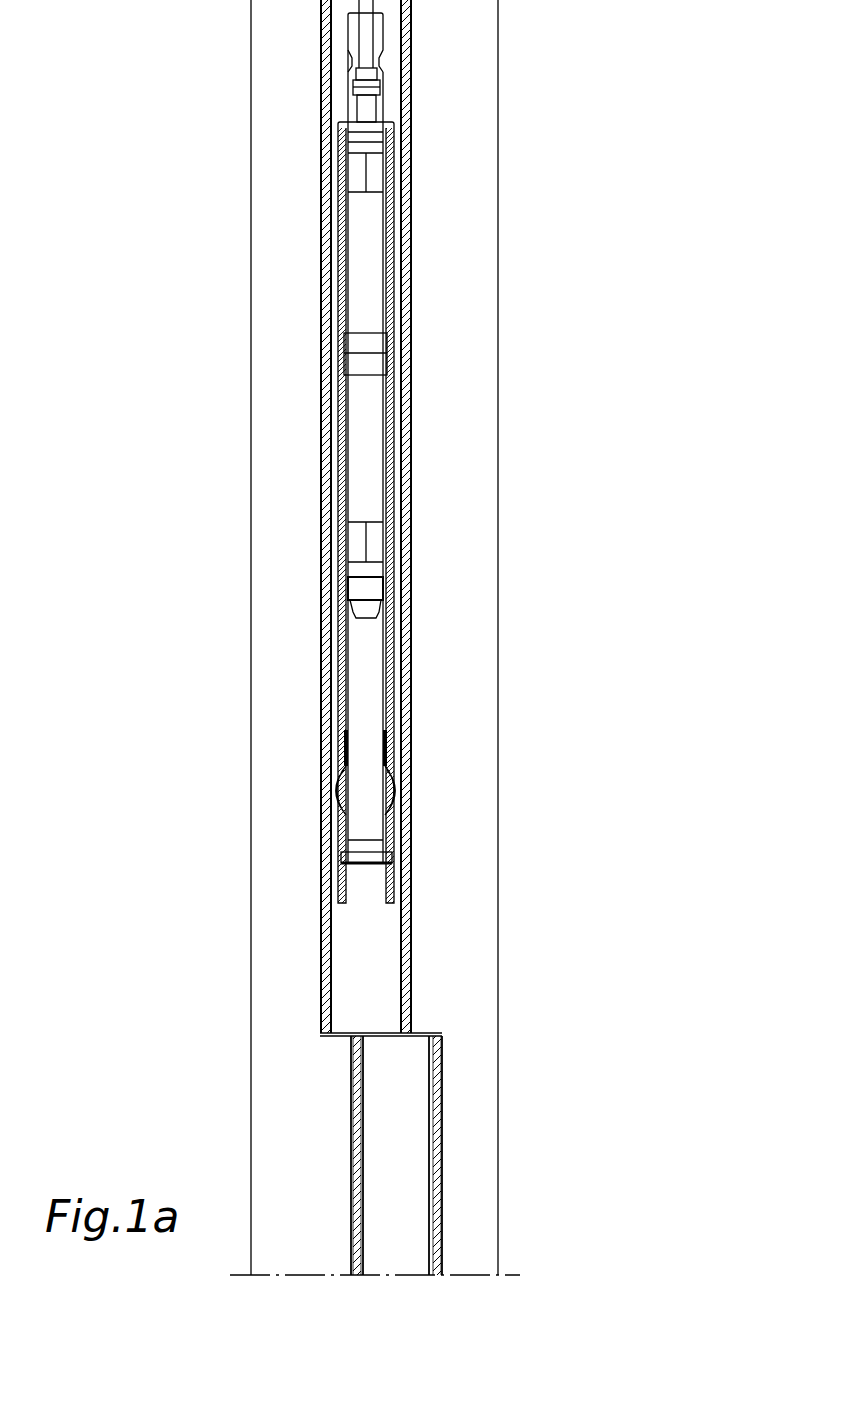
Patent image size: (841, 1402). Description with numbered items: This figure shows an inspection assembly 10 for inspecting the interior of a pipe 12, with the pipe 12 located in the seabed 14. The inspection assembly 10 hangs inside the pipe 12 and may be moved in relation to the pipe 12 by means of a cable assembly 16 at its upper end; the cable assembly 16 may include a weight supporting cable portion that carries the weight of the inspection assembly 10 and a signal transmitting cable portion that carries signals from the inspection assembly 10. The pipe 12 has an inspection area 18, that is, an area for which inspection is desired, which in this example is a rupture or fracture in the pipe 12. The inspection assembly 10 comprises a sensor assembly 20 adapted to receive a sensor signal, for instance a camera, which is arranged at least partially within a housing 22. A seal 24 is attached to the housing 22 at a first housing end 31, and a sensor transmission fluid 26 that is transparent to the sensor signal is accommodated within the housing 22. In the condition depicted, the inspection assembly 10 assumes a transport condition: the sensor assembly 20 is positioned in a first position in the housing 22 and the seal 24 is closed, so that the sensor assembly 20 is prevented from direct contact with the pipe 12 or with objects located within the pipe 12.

The inspection assembly 10 is at (404, 765).
The pipe 12 is at (314, 284).
The seabed 14 is at (307, 1088).
The cable assembly 16 is at (347, 29).
The inspection area 18 is at (378, 1044).
The sensor assembly 20 is at (357, 597).
The housing 22 is at (330, 435).
The seal 24 is at (368, 856).
The sensor transmission fluid 26 is at (357, 680).
The first housing end 31 is at (330, 882).